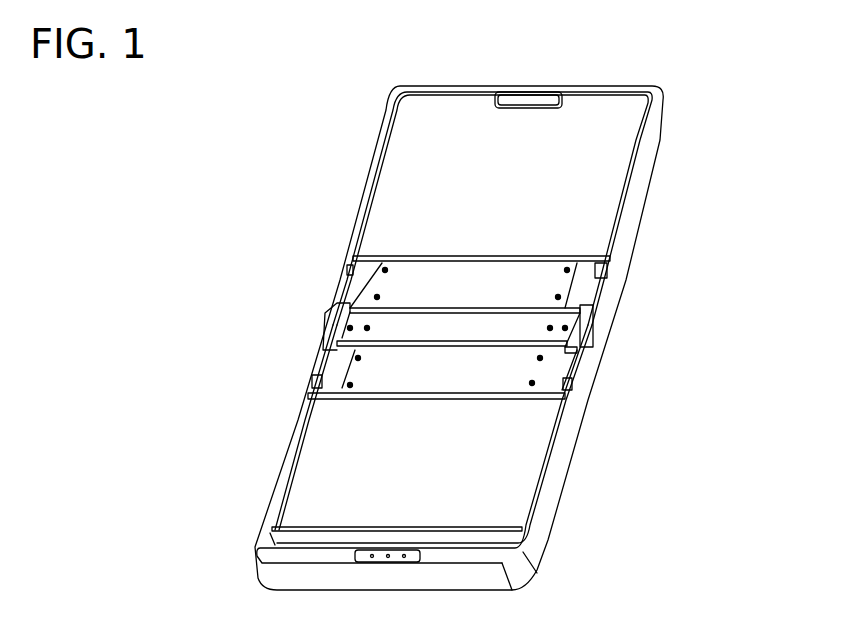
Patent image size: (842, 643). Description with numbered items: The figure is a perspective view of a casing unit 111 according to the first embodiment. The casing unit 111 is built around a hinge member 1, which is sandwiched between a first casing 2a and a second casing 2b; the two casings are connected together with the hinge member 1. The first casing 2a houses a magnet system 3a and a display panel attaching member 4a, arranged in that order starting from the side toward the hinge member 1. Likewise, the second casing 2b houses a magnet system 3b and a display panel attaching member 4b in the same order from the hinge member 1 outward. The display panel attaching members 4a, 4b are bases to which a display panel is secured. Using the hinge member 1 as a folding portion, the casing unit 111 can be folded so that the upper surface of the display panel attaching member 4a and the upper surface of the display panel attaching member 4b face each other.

The casing unit 111 is at (706, 44).
The first casing 2a is at (638, 203).
The display panel attaching member 4a is at (582, 222).
The magnet system 3a is at (560, 283).
The hinge member 1 is at (560, 333).
The magnet system 3b is at (560, 367).
The second casing 2b is at (563, 455).
The display panel attaching member 4b is at (507, 480).